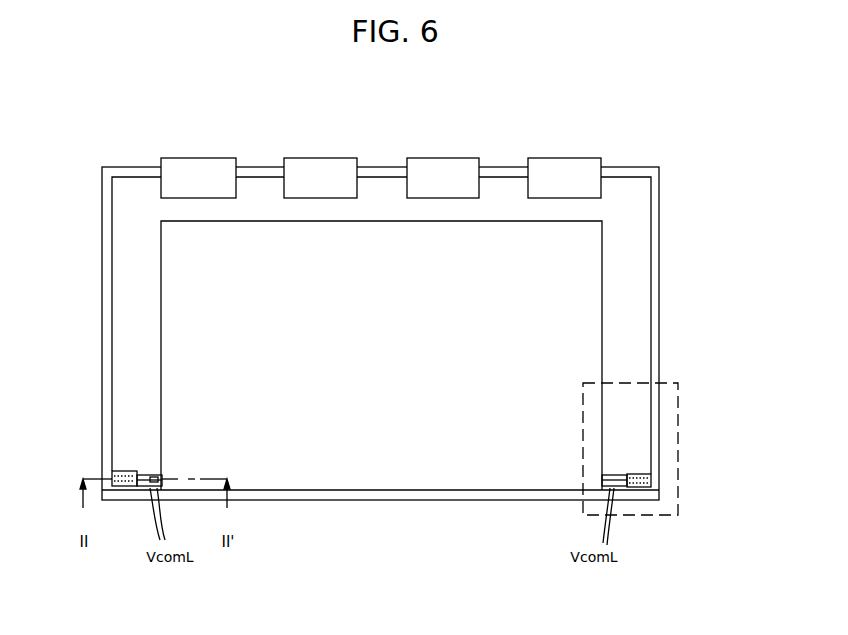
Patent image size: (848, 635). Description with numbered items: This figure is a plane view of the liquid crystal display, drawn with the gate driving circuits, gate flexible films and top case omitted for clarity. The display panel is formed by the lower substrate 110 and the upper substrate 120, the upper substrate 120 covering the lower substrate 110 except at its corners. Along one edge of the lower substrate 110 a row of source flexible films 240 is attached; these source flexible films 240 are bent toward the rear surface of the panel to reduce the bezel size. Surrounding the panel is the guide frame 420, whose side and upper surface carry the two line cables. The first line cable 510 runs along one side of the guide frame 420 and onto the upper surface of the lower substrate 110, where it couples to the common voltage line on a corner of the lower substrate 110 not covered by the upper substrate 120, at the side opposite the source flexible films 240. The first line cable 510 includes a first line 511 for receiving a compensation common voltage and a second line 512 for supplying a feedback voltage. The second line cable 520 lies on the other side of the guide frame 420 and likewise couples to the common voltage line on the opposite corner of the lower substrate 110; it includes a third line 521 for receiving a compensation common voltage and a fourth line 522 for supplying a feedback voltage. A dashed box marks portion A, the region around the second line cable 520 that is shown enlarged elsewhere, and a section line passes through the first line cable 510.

The lower substrate 110 is at (645, 188).
The upper substrate 120 is at (405, 463).
The source flexible films 240 is at (561, 160).
The guide frame 420 is at (626, 170).
The first line cable 510 is at (97, 505).
The first line 511 is at (123, 472).
The second line 512 is at (140, 487).
The second line cable 520 is at (666, 506).
The third line 521 is at (643, 475).
The fourth line 522 is at (637, 484).
The portion A is at (678, 410).